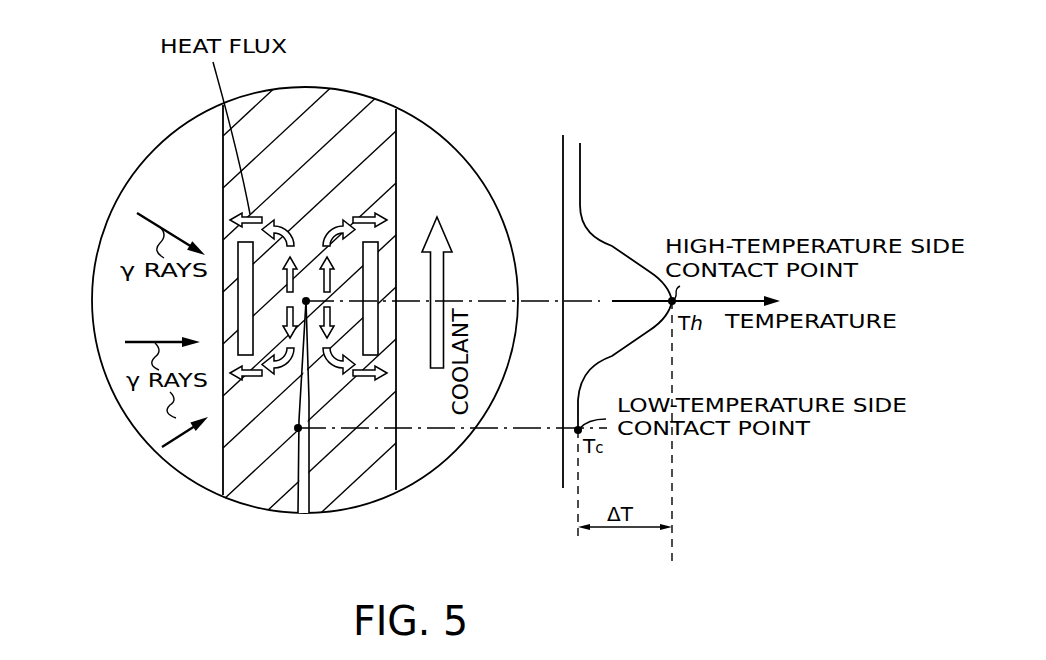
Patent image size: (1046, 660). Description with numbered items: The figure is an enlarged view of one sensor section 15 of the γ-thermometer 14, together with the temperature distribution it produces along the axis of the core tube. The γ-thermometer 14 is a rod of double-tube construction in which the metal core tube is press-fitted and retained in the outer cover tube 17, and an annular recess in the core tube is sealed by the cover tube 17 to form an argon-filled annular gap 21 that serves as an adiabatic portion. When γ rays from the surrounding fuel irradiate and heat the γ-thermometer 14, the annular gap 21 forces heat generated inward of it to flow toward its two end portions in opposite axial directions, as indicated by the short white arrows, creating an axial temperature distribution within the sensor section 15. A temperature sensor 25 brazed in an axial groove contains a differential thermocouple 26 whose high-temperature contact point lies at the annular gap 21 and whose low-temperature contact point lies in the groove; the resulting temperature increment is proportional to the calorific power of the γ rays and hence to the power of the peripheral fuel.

The γ-thermometer 14 is at (408, 166).
The sensor section 15 is at (212, 313).
The cover tube 17 is at (331, 112).
The annular gap 21 is at (378, 267).
The temperature sensor 25 is at (290, 404).
The differential thermocouple 26 is at (306, 301).